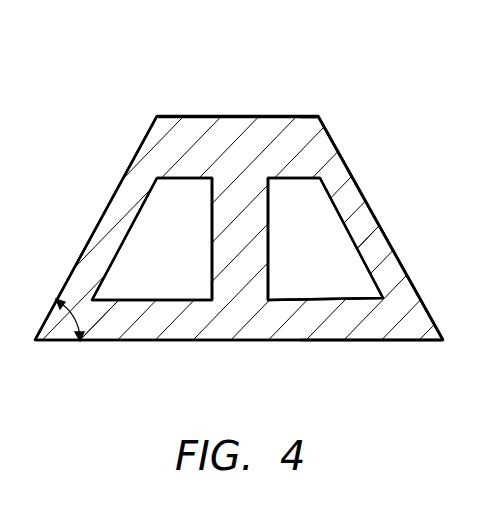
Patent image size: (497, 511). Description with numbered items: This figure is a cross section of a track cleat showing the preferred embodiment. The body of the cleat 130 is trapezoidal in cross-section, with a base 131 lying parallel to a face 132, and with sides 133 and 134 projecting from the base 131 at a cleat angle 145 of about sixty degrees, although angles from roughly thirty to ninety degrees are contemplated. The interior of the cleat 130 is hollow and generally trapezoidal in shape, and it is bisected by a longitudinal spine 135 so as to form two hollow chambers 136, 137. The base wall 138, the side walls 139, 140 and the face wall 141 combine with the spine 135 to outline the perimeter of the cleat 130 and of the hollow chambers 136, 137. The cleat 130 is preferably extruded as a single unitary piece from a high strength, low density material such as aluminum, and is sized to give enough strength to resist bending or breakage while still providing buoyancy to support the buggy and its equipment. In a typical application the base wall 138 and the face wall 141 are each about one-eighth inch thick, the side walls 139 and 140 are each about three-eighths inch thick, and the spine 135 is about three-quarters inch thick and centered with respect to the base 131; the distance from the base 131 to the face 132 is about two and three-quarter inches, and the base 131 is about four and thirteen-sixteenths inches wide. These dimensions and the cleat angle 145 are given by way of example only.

The cleat 130 is at (240, 101).
The base 131 is at (373, 342).
The face 132 is at (303, 117).
The side 133 is at (338, 150).
The side 134 is at (147, 145).
The longitudinal spine 135 is at (270, 284).
The hollow chamber 136 is at (323, 212).
The hollow chamber 137 is at (155, 217).
The base wall 138 is at (187, 323).
The side wall 139 is at (373, 237).
The side wall 140 is at (107, 230).
The face wall 141 is at (172, 122).
The cleat angle 145 is at (68, 322).